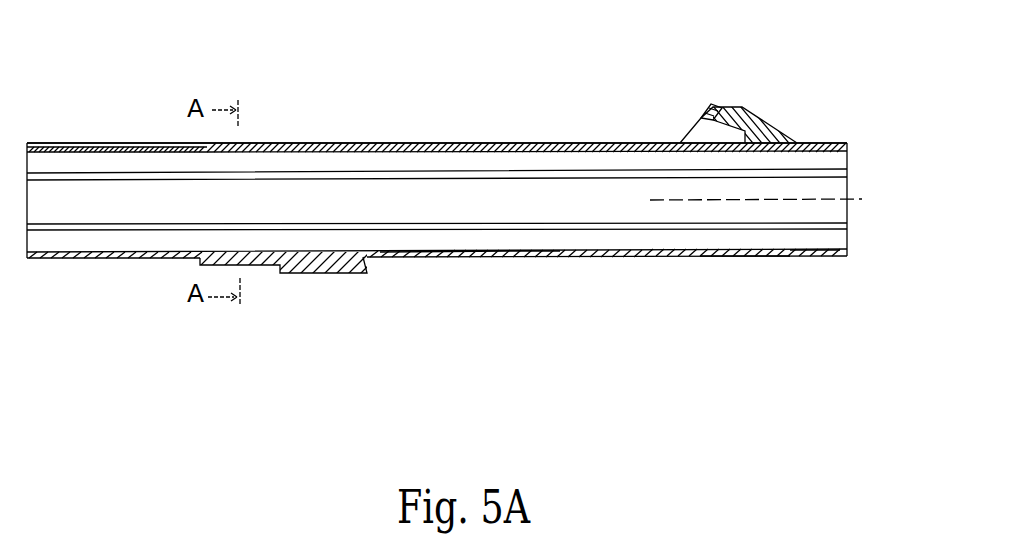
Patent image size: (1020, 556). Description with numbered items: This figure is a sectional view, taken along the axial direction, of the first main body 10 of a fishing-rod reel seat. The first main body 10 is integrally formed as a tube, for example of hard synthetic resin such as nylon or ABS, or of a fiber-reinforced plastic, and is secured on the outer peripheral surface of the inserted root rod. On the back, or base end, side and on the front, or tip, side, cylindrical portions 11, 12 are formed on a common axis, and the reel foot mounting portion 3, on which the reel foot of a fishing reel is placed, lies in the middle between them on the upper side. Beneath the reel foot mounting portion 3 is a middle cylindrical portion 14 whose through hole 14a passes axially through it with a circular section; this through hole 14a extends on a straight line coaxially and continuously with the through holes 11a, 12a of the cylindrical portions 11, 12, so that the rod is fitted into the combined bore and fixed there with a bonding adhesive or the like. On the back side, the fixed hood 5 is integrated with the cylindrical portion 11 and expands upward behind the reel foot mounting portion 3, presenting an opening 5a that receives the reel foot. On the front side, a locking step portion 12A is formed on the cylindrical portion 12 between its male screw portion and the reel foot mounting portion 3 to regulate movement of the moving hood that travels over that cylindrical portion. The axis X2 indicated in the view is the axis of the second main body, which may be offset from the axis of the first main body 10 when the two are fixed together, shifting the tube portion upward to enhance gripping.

The first main body 10 is at (551, 81).
The reel foot mounting portion 3 is at (456, 143).
The fixed hood 5 is at (744, 108).
The opening 5a is at (700, 124).
The cylindrical portion 11 is at (760, 257).
The through hole 11a is at (821, 250).
The cylindrical portion 12 is at (113, 259).
The through hole 12a is at (120, 153).
The locking step portion 12A is at (312, 273).
The middle cylindrical portion 14 is at (453, 257).
The through hole 14a is at (548, 250).
The axis X2 is at (775, 200).